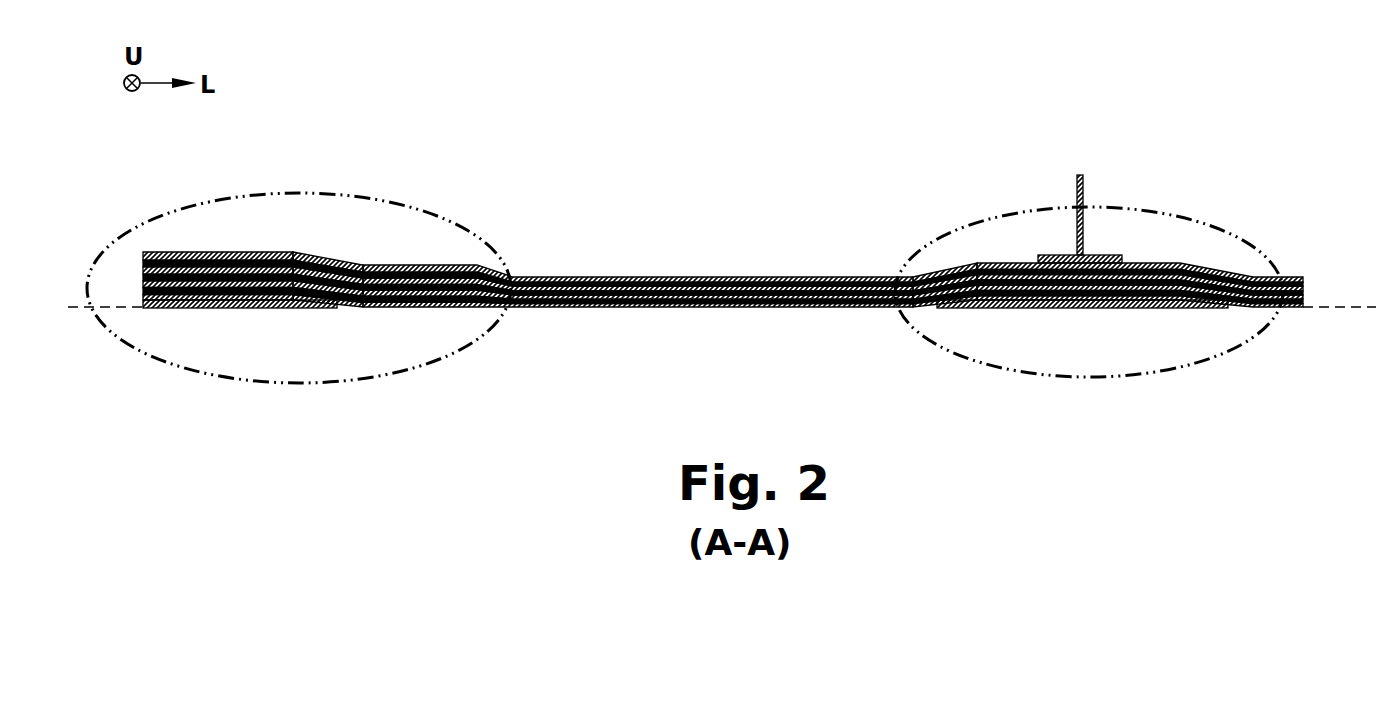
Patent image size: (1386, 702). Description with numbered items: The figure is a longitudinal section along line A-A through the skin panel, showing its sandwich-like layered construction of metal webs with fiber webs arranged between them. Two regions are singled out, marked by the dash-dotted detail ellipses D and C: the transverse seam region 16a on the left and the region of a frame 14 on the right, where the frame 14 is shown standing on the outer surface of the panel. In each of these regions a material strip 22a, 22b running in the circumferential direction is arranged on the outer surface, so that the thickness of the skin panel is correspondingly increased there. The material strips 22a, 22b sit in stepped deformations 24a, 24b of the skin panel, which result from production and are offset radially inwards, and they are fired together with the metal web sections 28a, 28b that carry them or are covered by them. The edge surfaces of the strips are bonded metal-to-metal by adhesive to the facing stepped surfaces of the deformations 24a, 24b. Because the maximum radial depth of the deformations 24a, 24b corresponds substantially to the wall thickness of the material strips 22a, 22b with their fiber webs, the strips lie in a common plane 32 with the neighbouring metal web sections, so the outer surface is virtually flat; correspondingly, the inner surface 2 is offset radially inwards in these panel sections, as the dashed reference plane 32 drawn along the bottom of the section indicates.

The inner surface 2 is at (702, 273).
The frame 14 is at (1084, 197).
The transverse seam region 16a is at (239, 276).
The material strip 22a is at (223, 309).
The material strip 22b is at (1162, 309).
The stepped deformation 24a is at (366, 322).
The stepped deformation 24b is at (969, 322).
The metal web section 28a is at (163, 309).
The metal web section 28b is at (1045, 309).
The plane 32 is at (1352, 305).
The detail region D is at (394, 204).
The detail region C is at (992, 212).